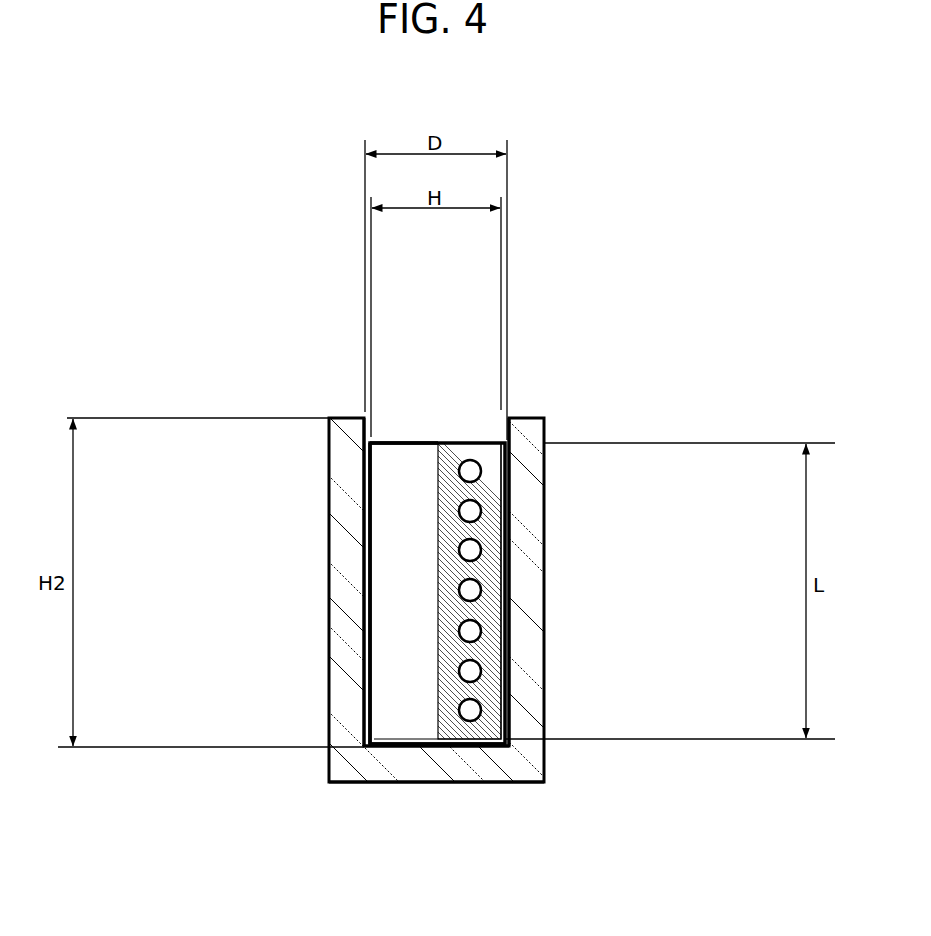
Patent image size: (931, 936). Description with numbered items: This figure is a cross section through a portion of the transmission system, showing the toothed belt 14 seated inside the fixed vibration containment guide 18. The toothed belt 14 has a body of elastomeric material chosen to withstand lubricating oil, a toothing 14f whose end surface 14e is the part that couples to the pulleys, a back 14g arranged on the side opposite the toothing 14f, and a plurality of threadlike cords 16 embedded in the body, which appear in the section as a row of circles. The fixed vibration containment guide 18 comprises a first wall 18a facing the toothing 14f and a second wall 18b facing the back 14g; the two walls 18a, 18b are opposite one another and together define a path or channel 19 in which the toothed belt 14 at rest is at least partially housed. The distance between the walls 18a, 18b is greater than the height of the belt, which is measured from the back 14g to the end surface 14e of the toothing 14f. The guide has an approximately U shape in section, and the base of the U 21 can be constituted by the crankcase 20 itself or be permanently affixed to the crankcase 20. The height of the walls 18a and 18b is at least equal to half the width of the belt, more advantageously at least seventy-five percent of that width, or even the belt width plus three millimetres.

The toothed belt 14 is at (396, 528).
The surface of the toothing 14e is at (362, 558).
The toothing 14f is at (390, 703).
The back 14g is at (495, 564).
The cords 16 is at (482, 712).
The fixed vibration containment guide 18 is at (533, 512).
The first wall 18a is at (378, 588).
The second wall 18b is at (499, 677).
The channel 19 is at (435, 430).
The crankcase 20 is at (466, 770).
The base of the U 21 is at (392, 767).